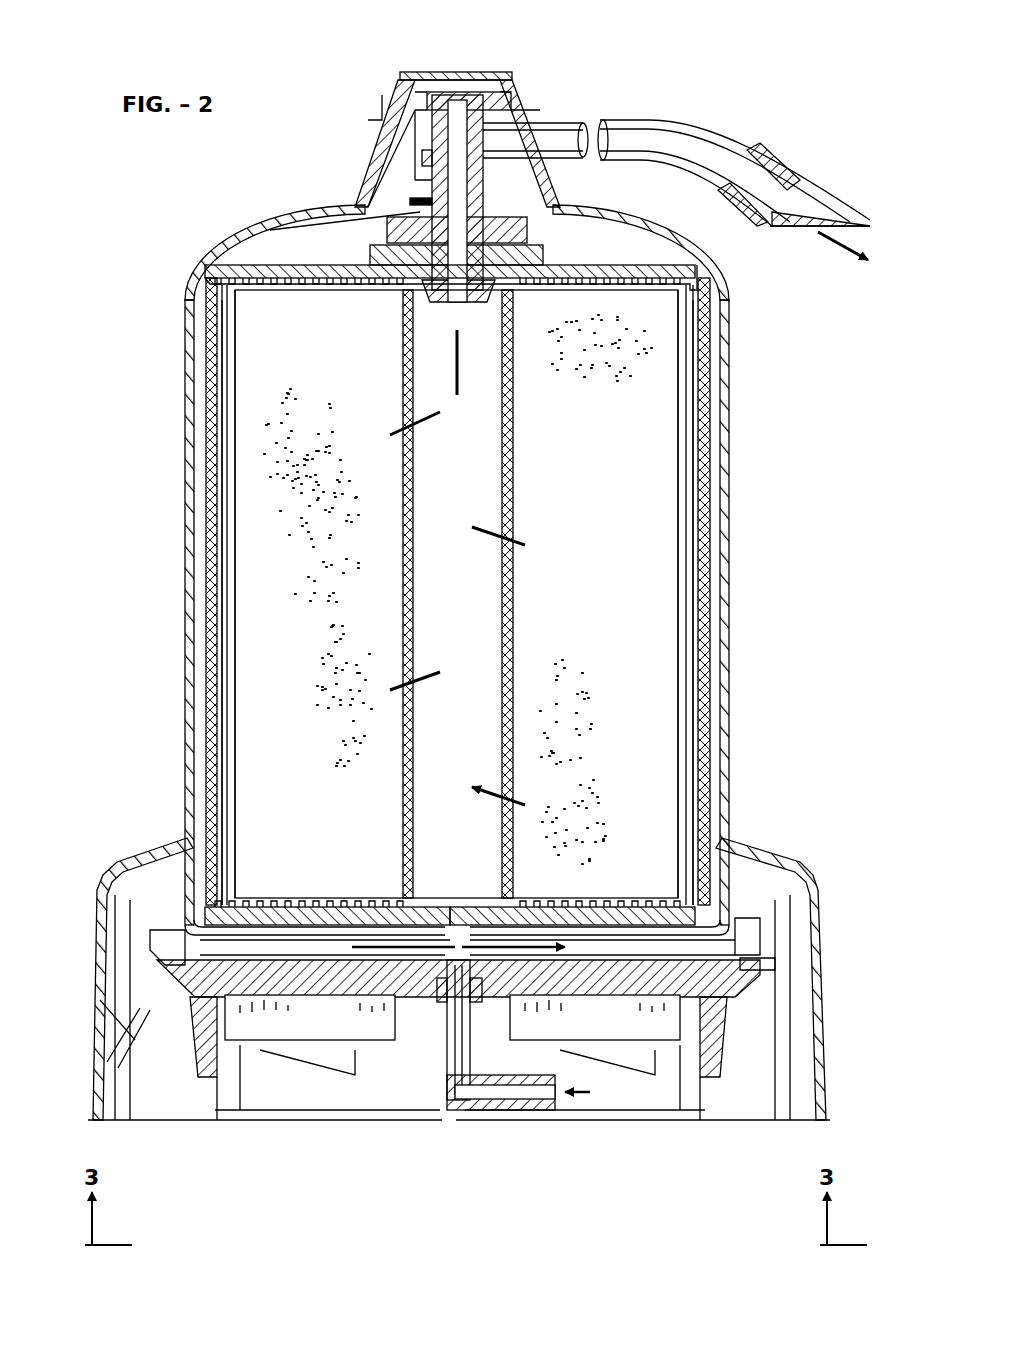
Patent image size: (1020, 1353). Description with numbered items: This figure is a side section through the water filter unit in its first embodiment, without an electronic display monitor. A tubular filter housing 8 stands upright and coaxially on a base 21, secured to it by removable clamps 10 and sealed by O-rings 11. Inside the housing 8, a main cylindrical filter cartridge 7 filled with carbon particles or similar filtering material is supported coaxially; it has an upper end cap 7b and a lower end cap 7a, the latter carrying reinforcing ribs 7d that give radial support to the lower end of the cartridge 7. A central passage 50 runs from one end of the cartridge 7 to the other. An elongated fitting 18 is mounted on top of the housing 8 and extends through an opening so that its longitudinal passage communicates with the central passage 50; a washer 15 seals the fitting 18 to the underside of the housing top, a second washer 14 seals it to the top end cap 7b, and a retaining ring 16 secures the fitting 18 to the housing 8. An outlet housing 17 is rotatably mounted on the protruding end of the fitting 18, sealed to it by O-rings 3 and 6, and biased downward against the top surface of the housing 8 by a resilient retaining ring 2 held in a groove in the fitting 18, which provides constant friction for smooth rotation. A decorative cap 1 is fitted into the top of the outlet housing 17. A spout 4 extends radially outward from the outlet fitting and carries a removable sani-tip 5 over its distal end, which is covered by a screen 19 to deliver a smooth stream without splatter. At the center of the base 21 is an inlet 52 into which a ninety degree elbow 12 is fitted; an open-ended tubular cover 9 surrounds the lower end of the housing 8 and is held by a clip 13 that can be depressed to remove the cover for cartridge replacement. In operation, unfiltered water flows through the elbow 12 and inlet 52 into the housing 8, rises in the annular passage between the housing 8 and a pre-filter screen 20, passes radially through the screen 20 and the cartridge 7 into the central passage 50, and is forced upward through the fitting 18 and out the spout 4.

The decorative cap 1 is at (412, 72).
The resilient retaining ring 2 is at (398, 90).
The O-ring 3 is at (500, 128).
The spout 4 is at (612, 122).
The sani-tip 5 is at (765, 158).
The O-ring 6 is at (427, 157).
The filter cartridge 7 is at (265, 400).
The lower end cap 7a is at (312, 898).
The upper end cap 7b is at (578, 270).
The reinforcing ribs 7d is at (605, 898).
The filter housing 8 is at (185, 688).
The tubular cover 9 is at (150, 850).
The removable clamps 10 is at (770, 912).
The O-rings 11 is at (150, 942).
The elbow 12 is at (440, 1067).
The clip 13 is at (125, 1042).
The washer 14 is at (370, 255).
The washer 15 is at (415, 212).
The retaining ring 16 is at (420, 200).
The outlet housing 17 is at (397, 128).
The fitting 18 is at (458, 95).
The screen 19 is at (806, 228).
The pre-filter screen 20 is at (208, 530).
The base 21 is at (332, 1000).
The central passage 50 is at (470, 590).
The inlet 52 is at (482, 1045).